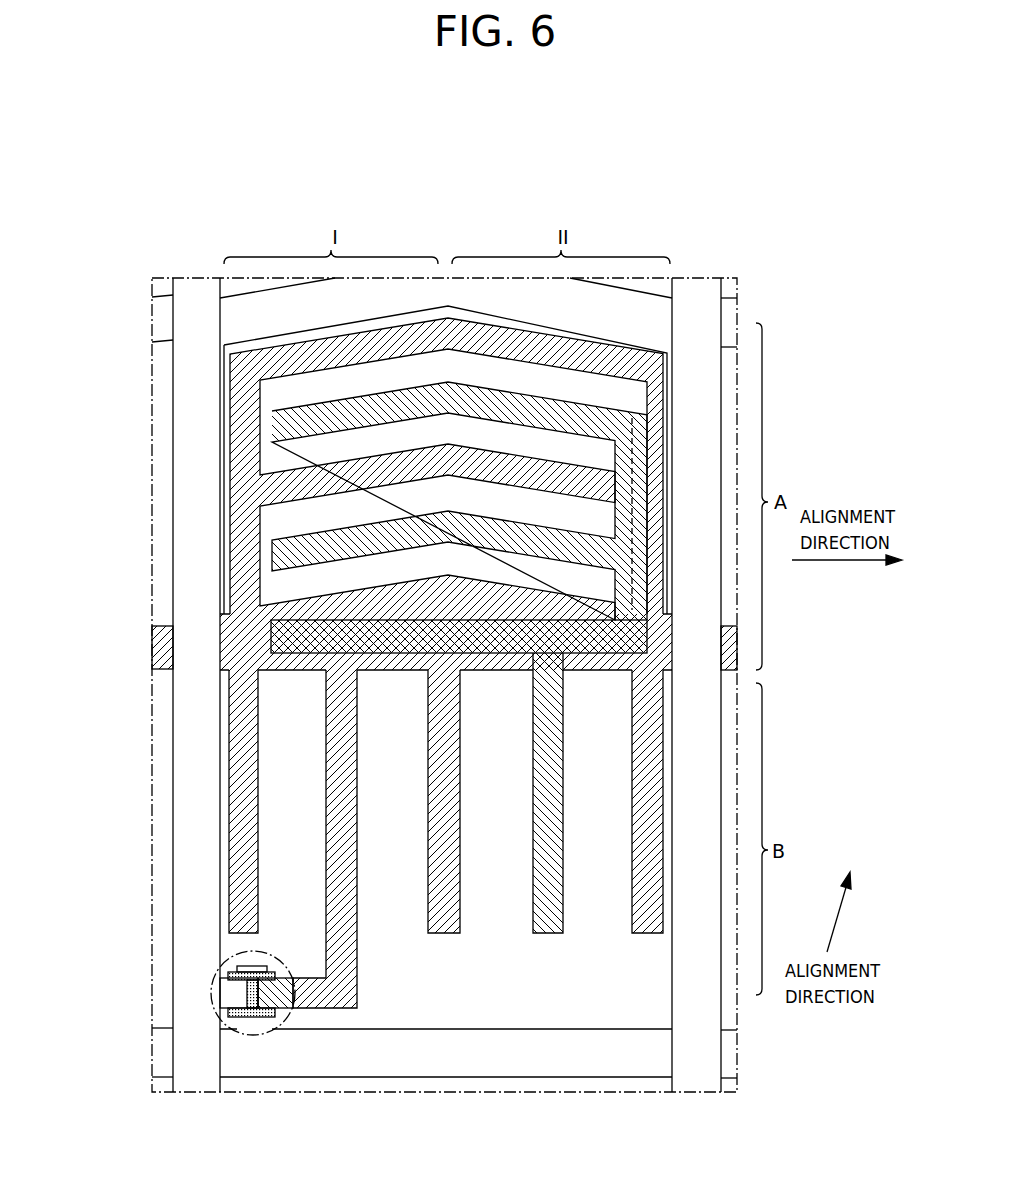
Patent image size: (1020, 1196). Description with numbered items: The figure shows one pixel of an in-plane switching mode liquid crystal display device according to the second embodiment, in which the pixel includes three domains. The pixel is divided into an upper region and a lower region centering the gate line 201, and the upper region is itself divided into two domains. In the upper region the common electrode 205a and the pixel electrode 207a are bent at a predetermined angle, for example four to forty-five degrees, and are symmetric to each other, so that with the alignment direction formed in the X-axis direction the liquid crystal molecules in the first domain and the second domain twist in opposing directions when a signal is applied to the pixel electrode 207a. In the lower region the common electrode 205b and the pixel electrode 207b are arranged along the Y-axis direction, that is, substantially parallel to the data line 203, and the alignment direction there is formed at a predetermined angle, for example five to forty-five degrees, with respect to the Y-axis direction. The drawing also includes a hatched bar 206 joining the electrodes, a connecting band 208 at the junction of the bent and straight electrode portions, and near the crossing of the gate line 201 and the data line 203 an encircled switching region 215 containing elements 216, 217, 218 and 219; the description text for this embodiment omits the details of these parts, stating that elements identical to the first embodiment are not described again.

The gate line 201 is at (477, 1068).
The data line 203 is at (185, 838).
The common electrode 205a is at (322, 355).
The common electrode 205b is at (240, 778).
The common line 206 is at (235, 645).
The pixel electrode 207a is at (285, 424).
The pixel electrode 207b is at (552, 927).
The connection electrode 208 is at (305, 615).
The thin film transistor 215 is at (223, 952).
The source electrode 216 is at (250, 1023).
The semiconductor layer 217 is at (230, 973).
The gate electrode 218 is at (233, 993).
The drain electrode 219 is at (268, 1002).